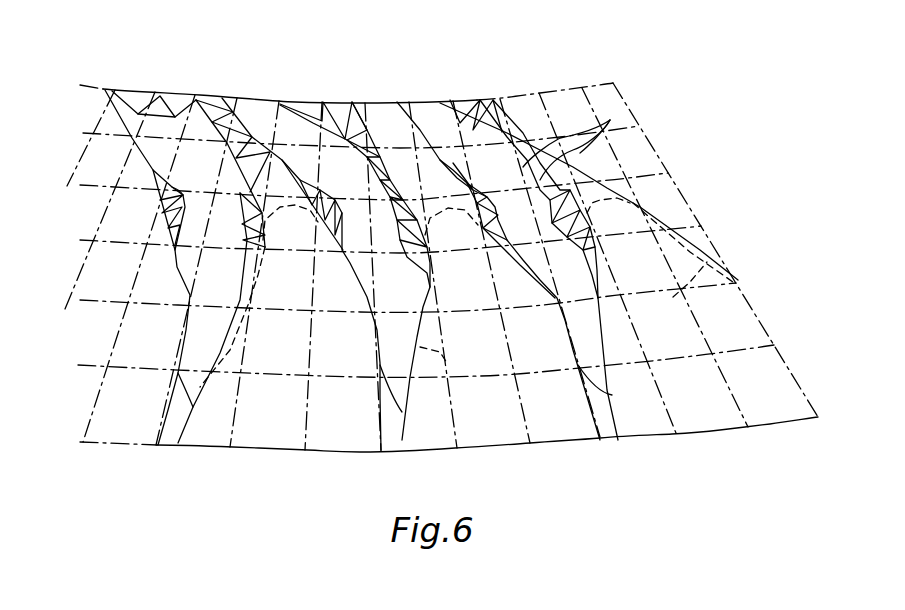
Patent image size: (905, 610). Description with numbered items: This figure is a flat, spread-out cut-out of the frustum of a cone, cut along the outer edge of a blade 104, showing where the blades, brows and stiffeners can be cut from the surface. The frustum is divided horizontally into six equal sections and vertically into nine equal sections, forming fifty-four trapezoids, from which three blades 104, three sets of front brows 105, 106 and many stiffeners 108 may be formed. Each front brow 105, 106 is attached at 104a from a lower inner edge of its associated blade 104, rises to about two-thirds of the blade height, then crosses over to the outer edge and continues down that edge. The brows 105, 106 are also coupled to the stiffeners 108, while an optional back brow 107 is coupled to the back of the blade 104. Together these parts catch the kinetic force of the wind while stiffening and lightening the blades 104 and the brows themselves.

The blade 104 is at (265, 433).
The brow attachment point 104a is at (443, 353).
The front brow 105 is at (200, 343).
The front brow 106 is at (168, 118).
The back brow 107 is at (598, 255).
The stiffener 108 is at (163, 217).